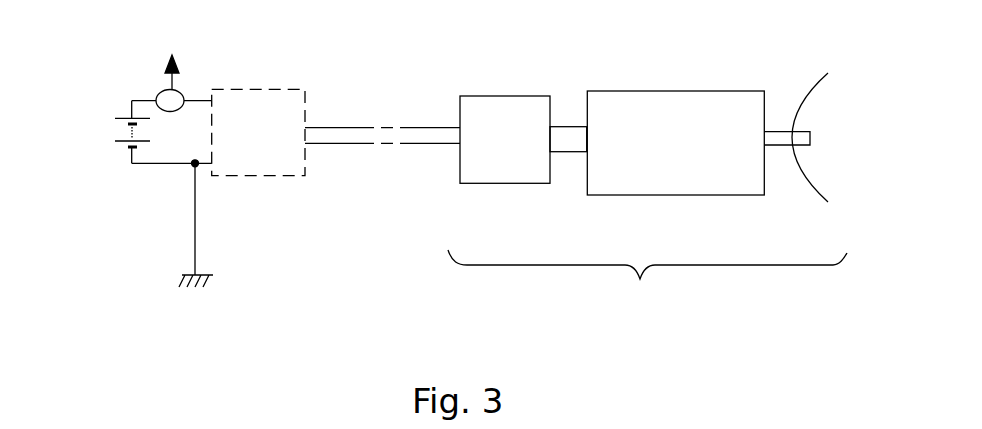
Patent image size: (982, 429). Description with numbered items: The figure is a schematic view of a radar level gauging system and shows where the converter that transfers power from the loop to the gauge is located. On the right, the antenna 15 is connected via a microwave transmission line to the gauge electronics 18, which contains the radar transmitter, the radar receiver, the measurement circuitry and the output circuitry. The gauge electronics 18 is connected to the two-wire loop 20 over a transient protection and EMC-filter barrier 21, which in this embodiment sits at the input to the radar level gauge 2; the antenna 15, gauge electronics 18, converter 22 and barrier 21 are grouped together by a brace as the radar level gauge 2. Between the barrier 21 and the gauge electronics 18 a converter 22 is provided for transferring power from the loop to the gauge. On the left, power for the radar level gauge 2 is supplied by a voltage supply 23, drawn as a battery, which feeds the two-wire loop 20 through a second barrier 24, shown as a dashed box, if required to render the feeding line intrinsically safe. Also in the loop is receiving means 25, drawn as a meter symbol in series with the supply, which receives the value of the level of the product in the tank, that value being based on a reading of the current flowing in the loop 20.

The radar level gauge 2 is at (647, 280).
The antenna 15 is at (813, 173).
The gauge electronics 18 is at (675, 143).
The two-wire loop 20 is at (393, 125).
The transient protection and EMC-filter barrier 21 is at (505, 139).
The converter 22 is at (570, 162).
The voltage supply 23 is at (98, 147).
The second barrier 24 is at (258, 132).
The receiving means 25 is at (161, 88).